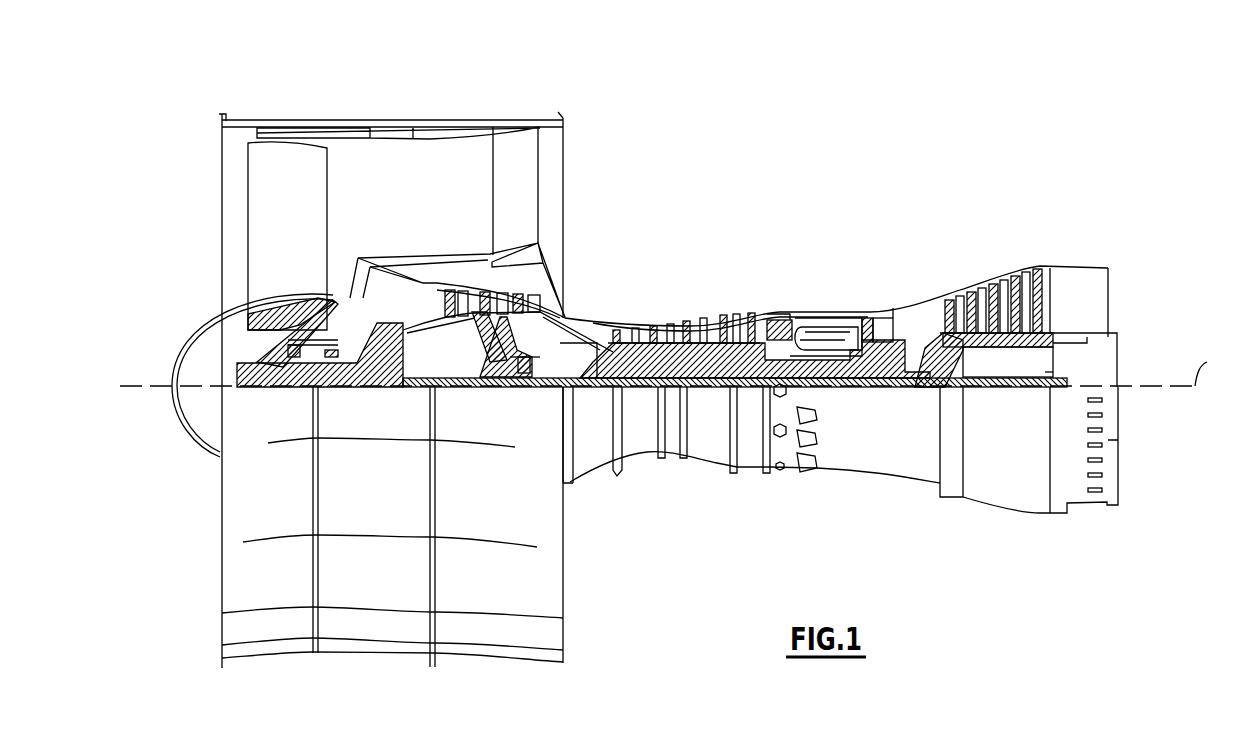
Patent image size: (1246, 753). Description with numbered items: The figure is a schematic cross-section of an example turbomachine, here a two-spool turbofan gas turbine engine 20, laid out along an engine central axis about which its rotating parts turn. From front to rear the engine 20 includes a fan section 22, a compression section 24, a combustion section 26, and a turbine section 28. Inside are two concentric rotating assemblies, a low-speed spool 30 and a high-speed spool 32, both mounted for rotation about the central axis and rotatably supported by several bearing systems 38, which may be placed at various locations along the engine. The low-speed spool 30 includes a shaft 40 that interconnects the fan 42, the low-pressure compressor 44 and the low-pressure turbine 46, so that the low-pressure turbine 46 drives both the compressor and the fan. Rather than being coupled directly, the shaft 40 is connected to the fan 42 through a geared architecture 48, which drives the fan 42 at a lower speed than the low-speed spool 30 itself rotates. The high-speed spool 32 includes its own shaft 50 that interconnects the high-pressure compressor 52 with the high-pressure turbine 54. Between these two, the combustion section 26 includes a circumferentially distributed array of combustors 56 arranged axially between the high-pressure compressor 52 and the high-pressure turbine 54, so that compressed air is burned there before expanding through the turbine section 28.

The gas turbine engine 20 is at (836, 163).
The fan section 22 is at (327, 118).
The compression section 24 is at (610, 302).
The combustion section 26 is at (818, 291).
The turbine section 28 is at (958, 257).
The low-speed spool 30 is at (718, 400).
The high-speed spool 32 is at (753, 340).
The bearing systems 38 is at (333, 360).
The shaft 40 is at (588, 452).
The fan 42 is at (301, 245).
The low-pressure compressor 44 is at (573, 312).
The low-pressure turbine 46 is at (1003, 290).
The geared architecture 48 is at (398, 373).
The shaft 50 is at (832, 383).
The high-pressure compressor 52 is at (685, 340).
The high-pressure turbine 54 is at (892, 345).
The combustors 56 is at (822, 333).